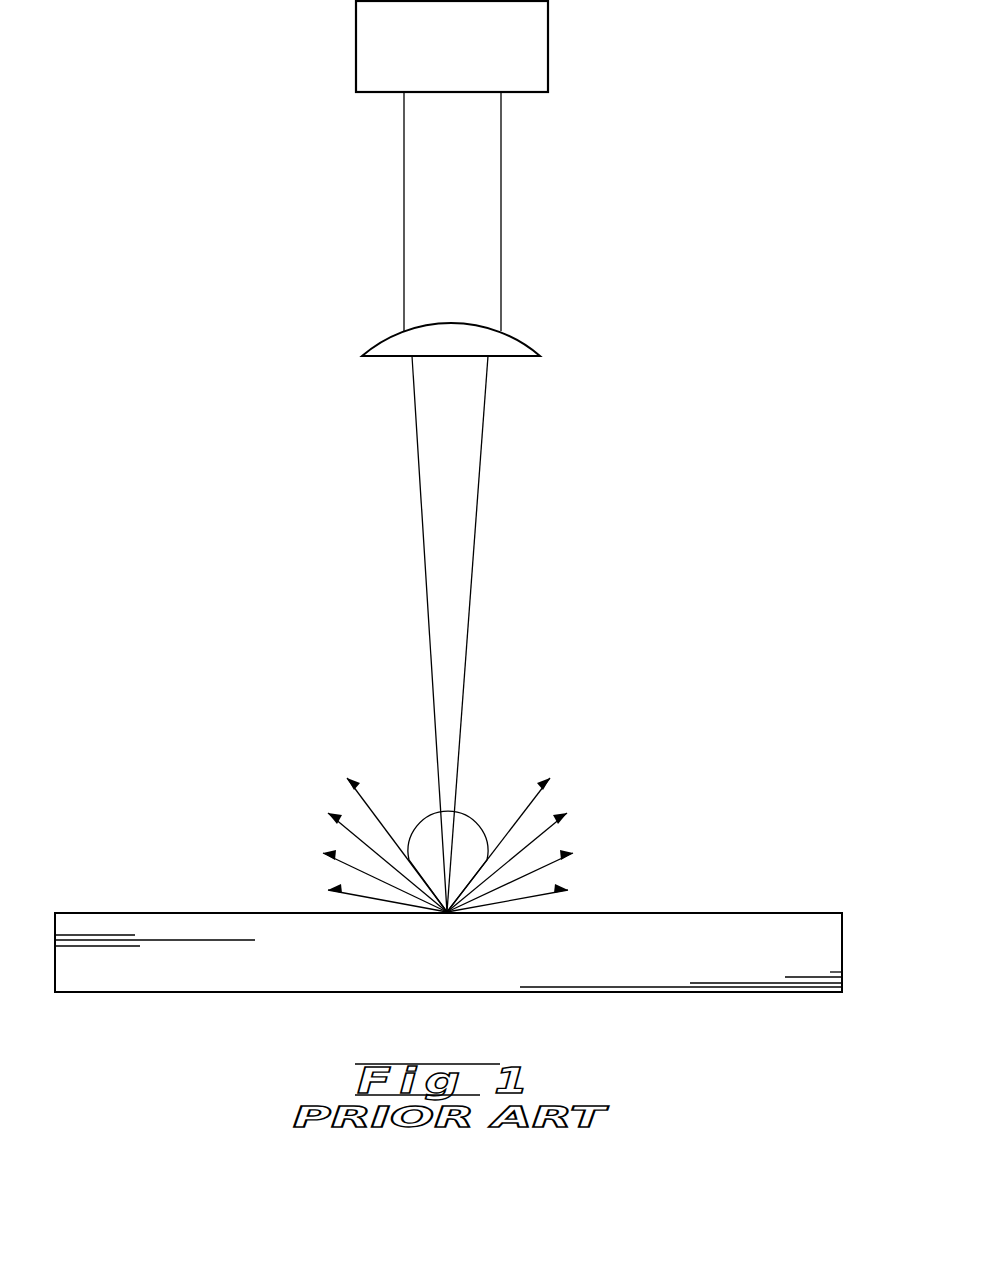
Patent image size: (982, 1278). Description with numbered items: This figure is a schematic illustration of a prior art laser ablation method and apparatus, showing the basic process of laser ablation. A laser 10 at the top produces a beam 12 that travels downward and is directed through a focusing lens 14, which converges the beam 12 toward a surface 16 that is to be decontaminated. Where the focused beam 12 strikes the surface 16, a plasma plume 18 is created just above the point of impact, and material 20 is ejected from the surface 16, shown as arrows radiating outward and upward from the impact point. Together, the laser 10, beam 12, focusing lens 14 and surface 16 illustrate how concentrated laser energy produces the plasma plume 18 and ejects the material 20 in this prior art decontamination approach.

The laser 10 is at (548, 36).
The beam 12 is at (404, 221).
The focusing lens 14 is at (520, 340).
The surface 16 is at (200, 966).
The plasma plume 18 is at (418, 826).
The material 20 is at (527, 805).